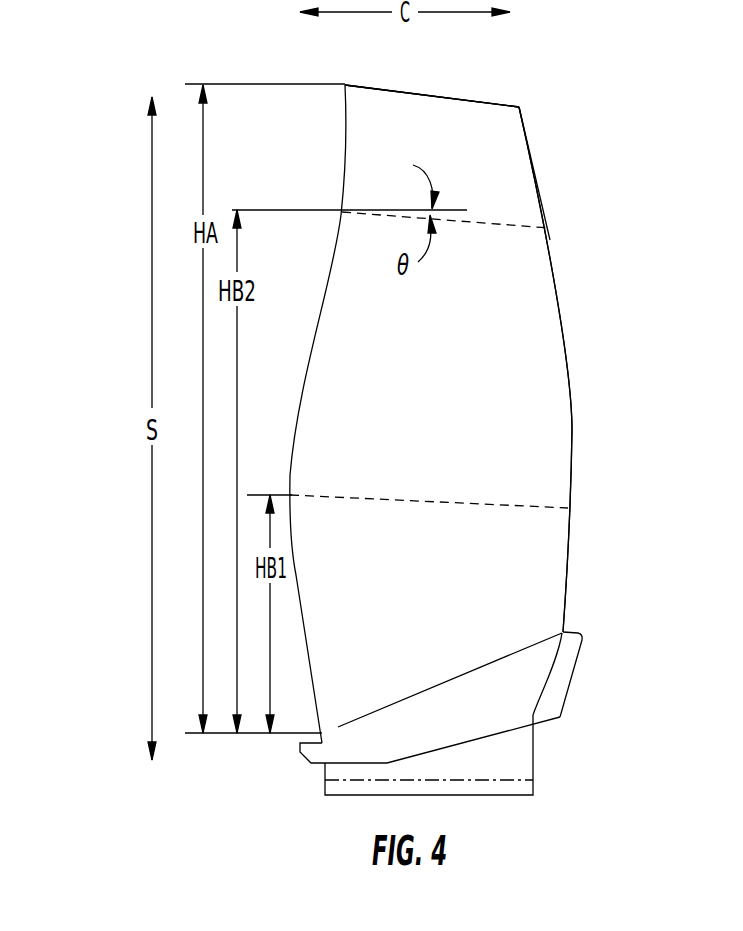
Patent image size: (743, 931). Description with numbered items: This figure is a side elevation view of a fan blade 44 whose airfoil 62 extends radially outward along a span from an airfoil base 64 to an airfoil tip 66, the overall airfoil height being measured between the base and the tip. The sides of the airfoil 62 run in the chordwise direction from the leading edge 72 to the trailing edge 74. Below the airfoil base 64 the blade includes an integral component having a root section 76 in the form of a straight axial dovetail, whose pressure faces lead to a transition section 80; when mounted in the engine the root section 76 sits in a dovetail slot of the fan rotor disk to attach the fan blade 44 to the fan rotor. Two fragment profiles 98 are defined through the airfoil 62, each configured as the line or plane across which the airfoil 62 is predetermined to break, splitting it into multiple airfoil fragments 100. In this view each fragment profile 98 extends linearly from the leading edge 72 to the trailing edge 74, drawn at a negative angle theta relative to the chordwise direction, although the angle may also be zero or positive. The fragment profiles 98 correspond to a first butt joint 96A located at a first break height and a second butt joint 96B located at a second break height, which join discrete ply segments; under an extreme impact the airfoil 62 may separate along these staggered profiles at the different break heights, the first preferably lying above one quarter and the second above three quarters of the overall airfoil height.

The fan blade 44 is at (475, 410).
The airfoil 62 is at (528, 135).
The airfoil base 64 is at (380, 708).
The airfoil tip 66 is at (363, 80).
The leading edge 72 is at (340, 174).
The trailing edge 74 is at (572, 362).
The root section 76 is at (517, 763).
The transition section 80 is at (512, 717).
The first butt joint 96A is at (540, 503).
The second butt joint 96B is at (503, 220).
The fragment profile 98 is at (488, 338).
The airfoil fragment 100 is at (467, 112).